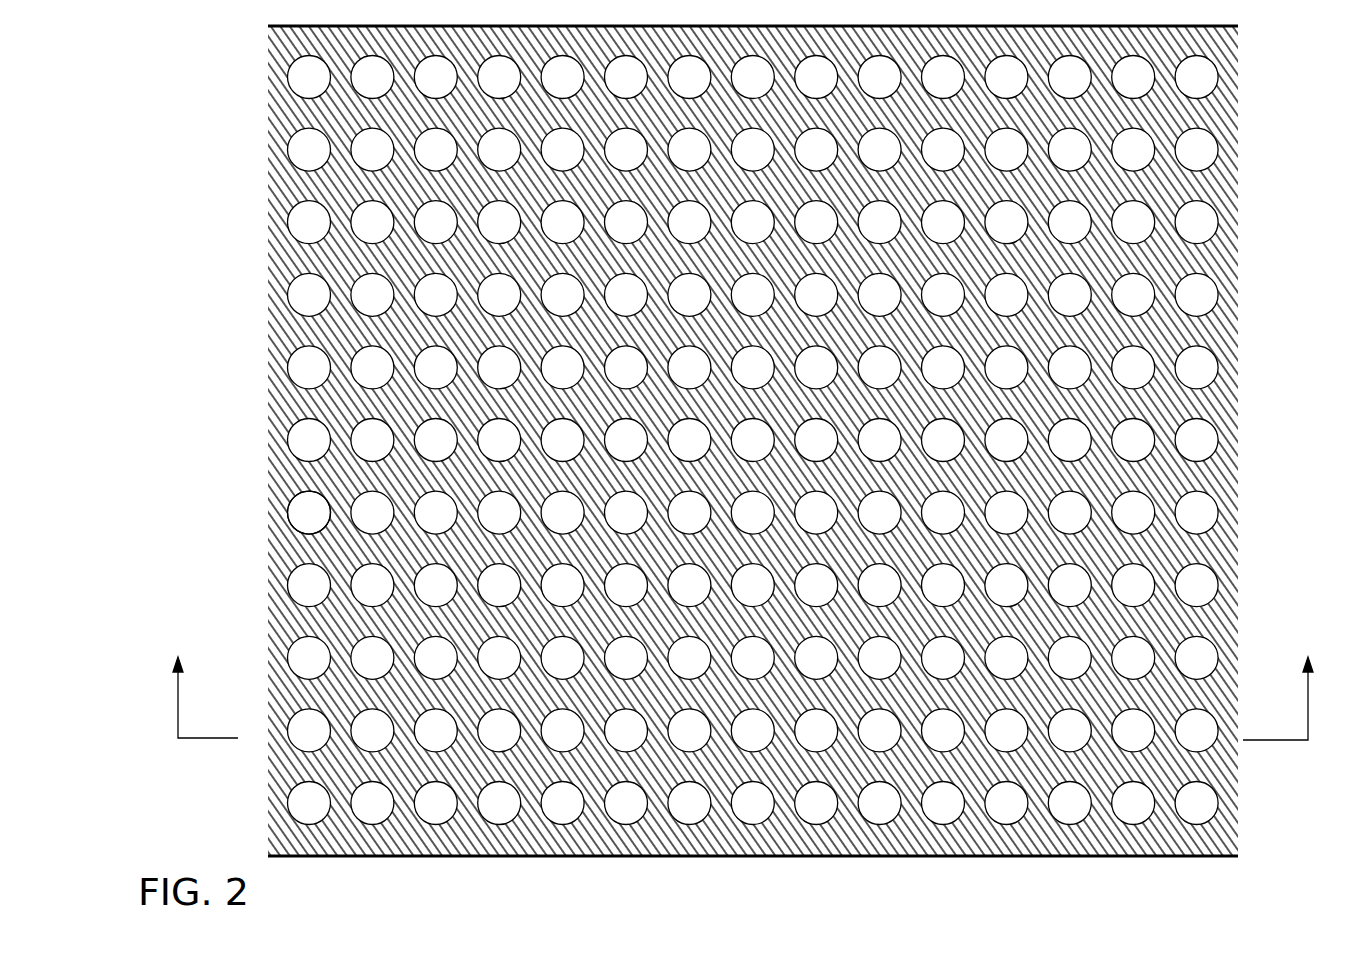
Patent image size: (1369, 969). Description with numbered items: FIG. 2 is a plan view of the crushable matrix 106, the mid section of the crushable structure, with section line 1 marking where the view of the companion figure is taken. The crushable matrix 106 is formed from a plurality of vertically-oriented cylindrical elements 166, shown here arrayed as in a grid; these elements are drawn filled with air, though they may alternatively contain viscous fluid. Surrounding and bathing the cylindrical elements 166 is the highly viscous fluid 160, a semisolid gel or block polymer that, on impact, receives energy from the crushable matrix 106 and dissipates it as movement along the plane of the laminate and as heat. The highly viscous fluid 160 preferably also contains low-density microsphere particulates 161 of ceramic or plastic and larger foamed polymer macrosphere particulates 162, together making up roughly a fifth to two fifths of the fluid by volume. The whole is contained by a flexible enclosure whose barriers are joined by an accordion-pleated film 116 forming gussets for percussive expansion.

The highly viscous fluid 160 is at (740, 441).
The low-density microsphere particulates 161 is at (740, 441).
The macrosphere particulates 162 is at (333, 283).
The crushable matrix 106 is at (312, 377).
The cylindrical elements 166 is at (303, 513).
The film 116 is at (982, 838).
The section line 1- 1 is at (743, 691).